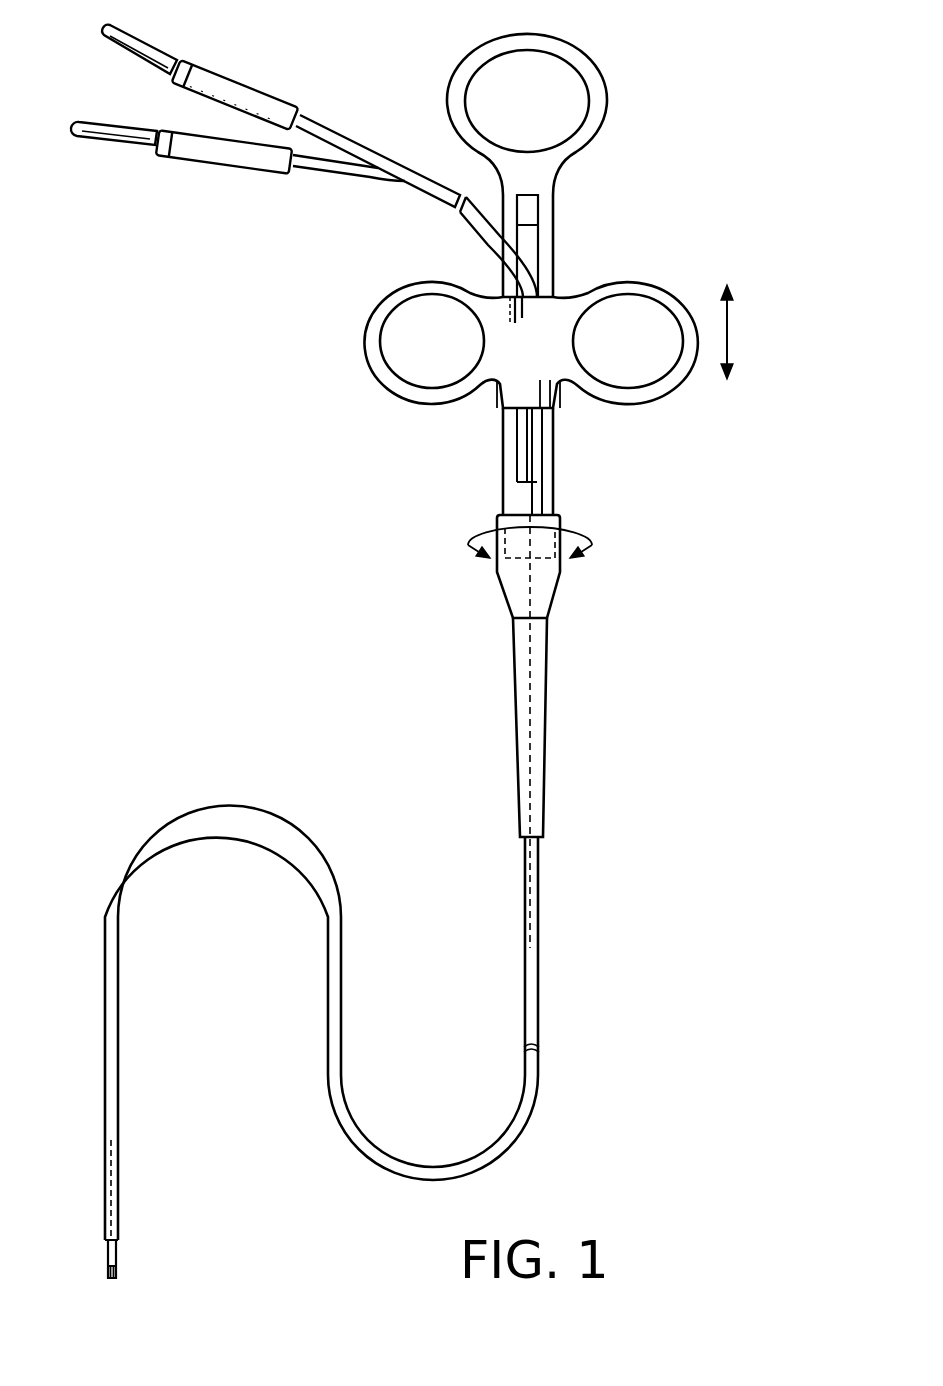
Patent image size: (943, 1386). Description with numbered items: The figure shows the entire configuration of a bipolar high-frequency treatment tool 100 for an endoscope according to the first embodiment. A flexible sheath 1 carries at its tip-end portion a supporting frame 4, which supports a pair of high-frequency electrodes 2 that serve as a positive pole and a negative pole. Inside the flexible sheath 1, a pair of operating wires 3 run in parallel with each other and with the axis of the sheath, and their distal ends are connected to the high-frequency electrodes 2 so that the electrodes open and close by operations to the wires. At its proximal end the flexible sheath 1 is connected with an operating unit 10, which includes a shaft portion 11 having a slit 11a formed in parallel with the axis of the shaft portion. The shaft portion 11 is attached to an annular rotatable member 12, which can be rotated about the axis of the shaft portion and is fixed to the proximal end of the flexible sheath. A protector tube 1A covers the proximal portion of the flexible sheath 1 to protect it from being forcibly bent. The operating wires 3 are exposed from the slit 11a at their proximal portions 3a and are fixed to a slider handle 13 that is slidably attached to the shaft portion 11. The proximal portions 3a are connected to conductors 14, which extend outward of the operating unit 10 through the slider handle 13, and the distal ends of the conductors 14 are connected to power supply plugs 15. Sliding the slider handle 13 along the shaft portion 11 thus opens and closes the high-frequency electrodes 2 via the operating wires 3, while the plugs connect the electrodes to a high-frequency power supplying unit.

The flexible sheath 1 is at (207, 798).
The protector tube 1A is at (546, 777).
The high-frequency electrodes 2 is at (120, 1273).
The operating wires 3 is at (115, 1173).
The proximal portions 3a is at (522, 462).
The supporting frame 4 is at (108, 1255).
The operating unit 10 is at (614, 224).
The shaft portion 11 is at (555, 460).
The slit 11a is at (543, 440).
The annular rotatable member 12 is at (548, 583).
The slider handle 13 is at (363, 352).
The conductors 14 is at (333, 175).
The power supply plugs 15 is at (113, 156).
The bipolar high-frequency treatment tool 100 is at (734, 757).